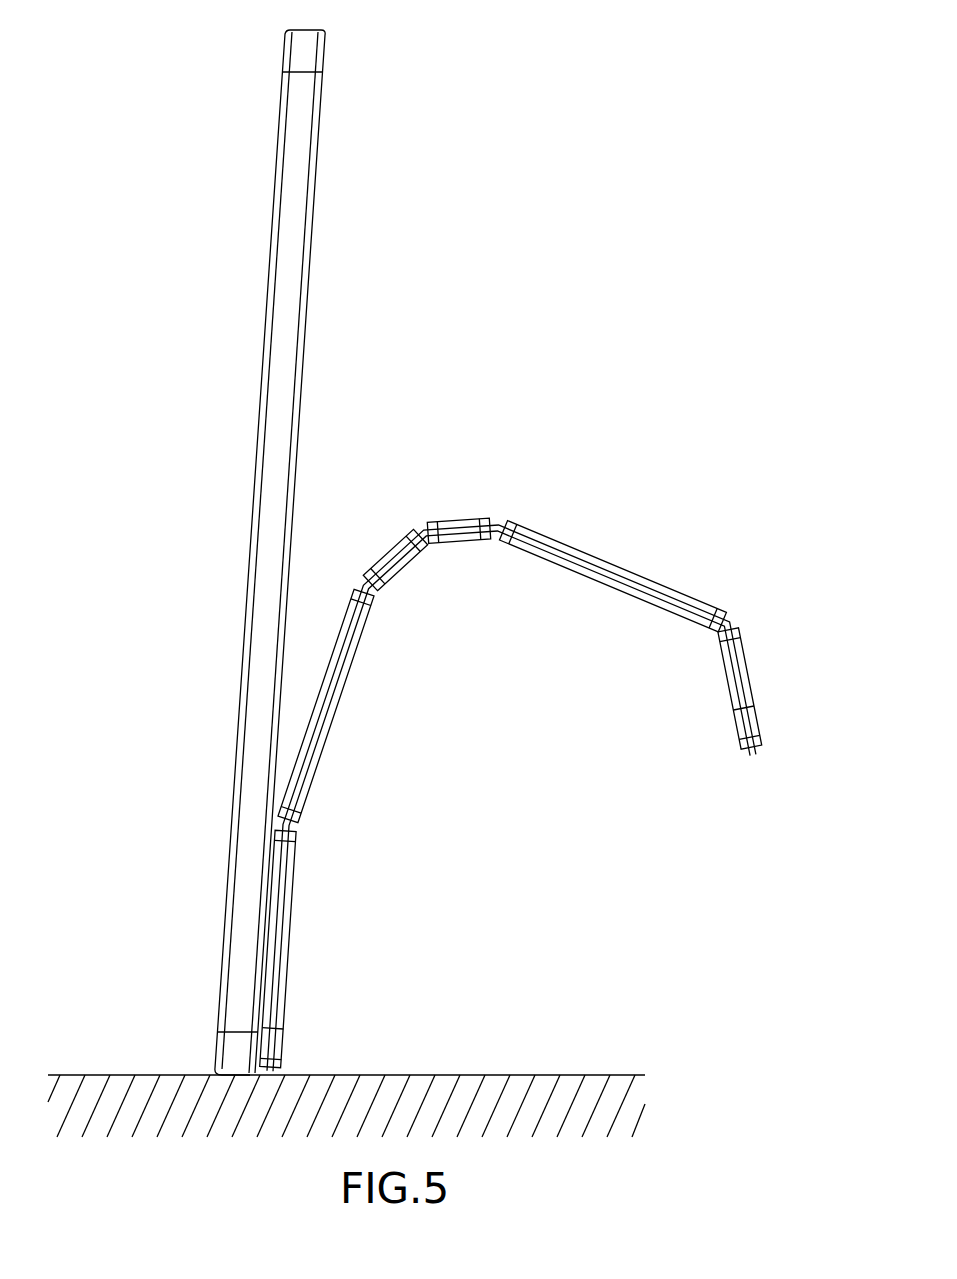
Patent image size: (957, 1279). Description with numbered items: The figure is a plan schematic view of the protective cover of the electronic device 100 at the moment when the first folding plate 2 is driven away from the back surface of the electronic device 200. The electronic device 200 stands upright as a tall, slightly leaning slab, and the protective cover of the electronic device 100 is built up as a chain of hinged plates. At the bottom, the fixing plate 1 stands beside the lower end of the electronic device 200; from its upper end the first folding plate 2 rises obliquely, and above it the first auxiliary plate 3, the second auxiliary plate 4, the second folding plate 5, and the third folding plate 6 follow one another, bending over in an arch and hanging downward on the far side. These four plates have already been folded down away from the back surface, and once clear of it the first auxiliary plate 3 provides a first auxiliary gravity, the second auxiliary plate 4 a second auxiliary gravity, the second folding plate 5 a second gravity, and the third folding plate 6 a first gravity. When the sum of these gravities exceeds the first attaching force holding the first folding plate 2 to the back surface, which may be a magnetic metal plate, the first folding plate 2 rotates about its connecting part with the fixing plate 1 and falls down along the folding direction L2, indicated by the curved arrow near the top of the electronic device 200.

The fixing plate 1 is at (282, 928).
The first folding plate 2 is at (330, 702).
The first auxiliary plate 3 is at (405, 563).
The second auxiliary plate 4 is at (465, 538).
The second folding plate 5 is at (580, 567).
The third folding plate 6 is at (737, 688).
The protective cover of the electronic device 100 is at (511, 759).
The electronic device 200 is at (288, 300).
The folding direction L2 is at (440, 230).